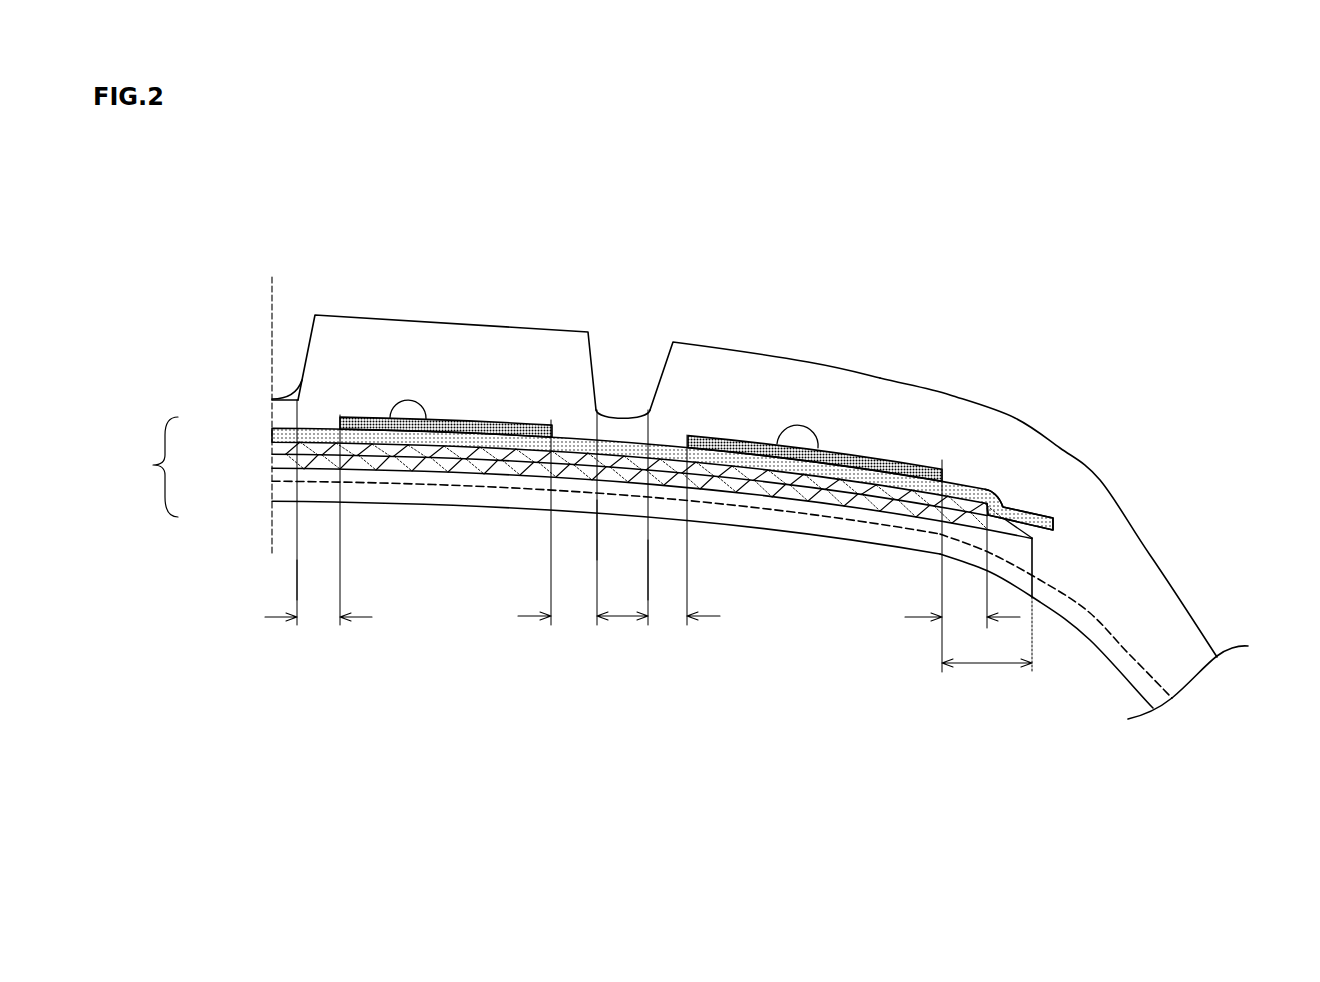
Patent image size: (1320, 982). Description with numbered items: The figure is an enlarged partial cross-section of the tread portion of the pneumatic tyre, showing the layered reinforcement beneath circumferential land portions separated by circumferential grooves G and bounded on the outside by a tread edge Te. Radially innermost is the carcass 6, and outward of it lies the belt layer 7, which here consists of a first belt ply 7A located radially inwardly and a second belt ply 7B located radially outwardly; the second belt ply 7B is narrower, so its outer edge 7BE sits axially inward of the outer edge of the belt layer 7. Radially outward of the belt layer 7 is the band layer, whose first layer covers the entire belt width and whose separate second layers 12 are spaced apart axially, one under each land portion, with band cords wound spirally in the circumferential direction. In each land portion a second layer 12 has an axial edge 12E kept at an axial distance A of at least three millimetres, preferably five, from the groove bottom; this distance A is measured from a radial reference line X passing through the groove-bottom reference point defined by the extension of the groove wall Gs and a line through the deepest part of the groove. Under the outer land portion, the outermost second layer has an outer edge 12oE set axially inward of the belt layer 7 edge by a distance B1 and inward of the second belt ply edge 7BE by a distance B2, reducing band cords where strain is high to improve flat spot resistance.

The belt layer 7 is at (157, 467).
The first belt ply 7A is at (285, 477).
The second belt ply 7B is at (285, 450).
The outer edge of the second belt ply 7BE is at (1000, 507).
The second layer 12 is at (438, 429).
The axial edge of the second layer 12E is at (344, 397).
The outer edge of the outermost second layer 12oE is at (946, 451).
The circumferential groove G is at (301, 342).
The groove wall Gs is at (305, 358).
The tread edge Te is at (1015, 418).
The carcass 6 is at (1090, 613).
The radial reference line X is at (297, 578).
The axial distance A is at (492, 630).
The distance B1 is at (987, 676).
The distance B2 is at (962, 629).